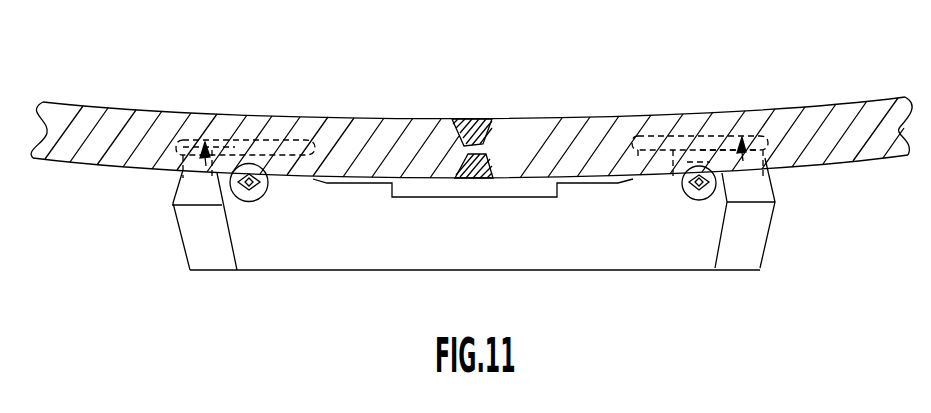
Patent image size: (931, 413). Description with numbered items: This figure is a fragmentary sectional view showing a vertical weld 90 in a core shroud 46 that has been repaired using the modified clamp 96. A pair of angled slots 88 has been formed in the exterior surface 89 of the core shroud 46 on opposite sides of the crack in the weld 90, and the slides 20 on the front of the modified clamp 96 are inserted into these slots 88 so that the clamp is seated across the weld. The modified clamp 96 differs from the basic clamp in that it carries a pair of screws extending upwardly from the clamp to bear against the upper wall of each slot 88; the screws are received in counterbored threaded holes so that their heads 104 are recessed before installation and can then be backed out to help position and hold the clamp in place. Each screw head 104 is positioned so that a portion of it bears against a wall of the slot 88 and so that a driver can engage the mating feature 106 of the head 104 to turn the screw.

The core shroud 46 is at (112, 98).
The exterior surface 89 is at (109, 168).
The vertical weld 90 is at (458, 130).
The slots 88 is at (193, 183).
The slides 20 is at (289, 130).
The modified clamp 96 is at (290, 276).
The mating feature 106 is at (244, 199).
The screw heads 104 is at (232, 190).